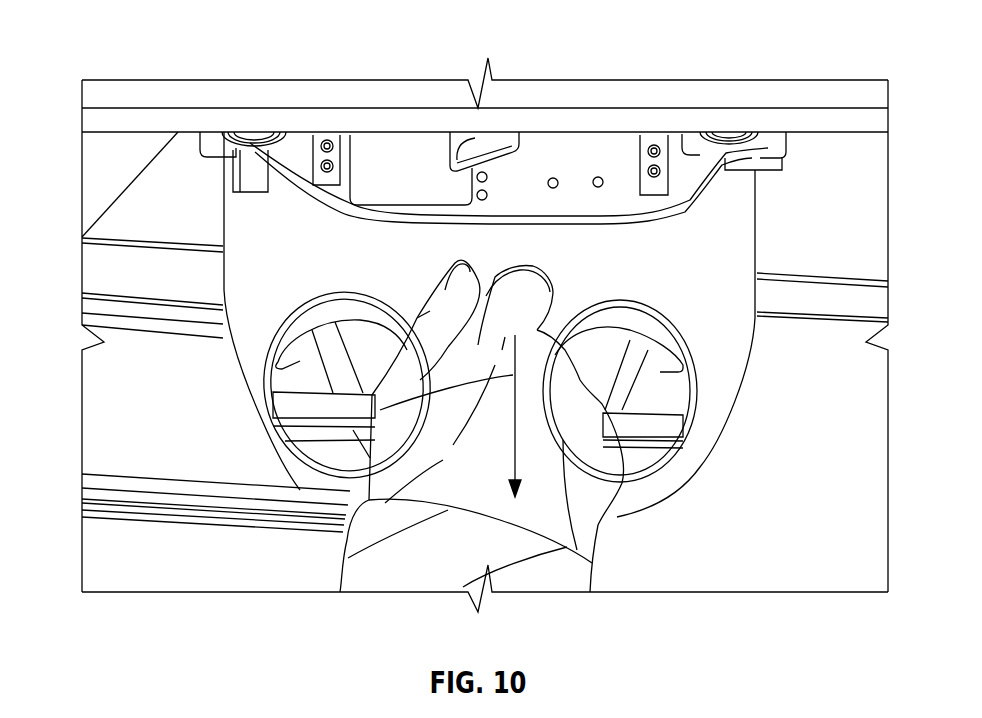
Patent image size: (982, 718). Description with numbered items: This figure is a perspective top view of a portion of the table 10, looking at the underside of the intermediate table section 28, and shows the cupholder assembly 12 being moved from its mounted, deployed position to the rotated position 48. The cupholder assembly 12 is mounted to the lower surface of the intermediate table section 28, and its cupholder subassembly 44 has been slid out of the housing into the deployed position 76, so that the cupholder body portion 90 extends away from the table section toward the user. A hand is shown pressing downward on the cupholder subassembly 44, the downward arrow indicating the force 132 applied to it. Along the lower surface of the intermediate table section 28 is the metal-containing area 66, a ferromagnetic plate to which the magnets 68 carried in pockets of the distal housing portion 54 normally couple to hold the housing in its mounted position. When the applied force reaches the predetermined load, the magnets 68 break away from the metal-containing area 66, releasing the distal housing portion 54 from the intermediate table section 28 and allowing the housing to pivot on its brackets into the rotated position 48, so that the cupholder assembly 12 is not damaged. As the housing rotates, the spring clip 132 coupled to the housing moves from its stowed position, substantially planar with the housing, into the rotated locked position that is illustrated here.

The table 10 is at (805, 92).
The cupholder assembly 12 is at (738, 231).
The intermediate table section 28 is at (100, 125).
The cupholder subassembly 44 is at (313, 482).
The rotated position 48 is at (203, 133).
The distal housing portion 54 is at (217, 137).
The metal-containing area 66 is at (233, 130).
The magnets 68 is at (257, 157).
The deployed position 76 is at (788, 393).
The cupholder body portion 90 is at (236, 357).
The spring clip 132 is at (480, 142).